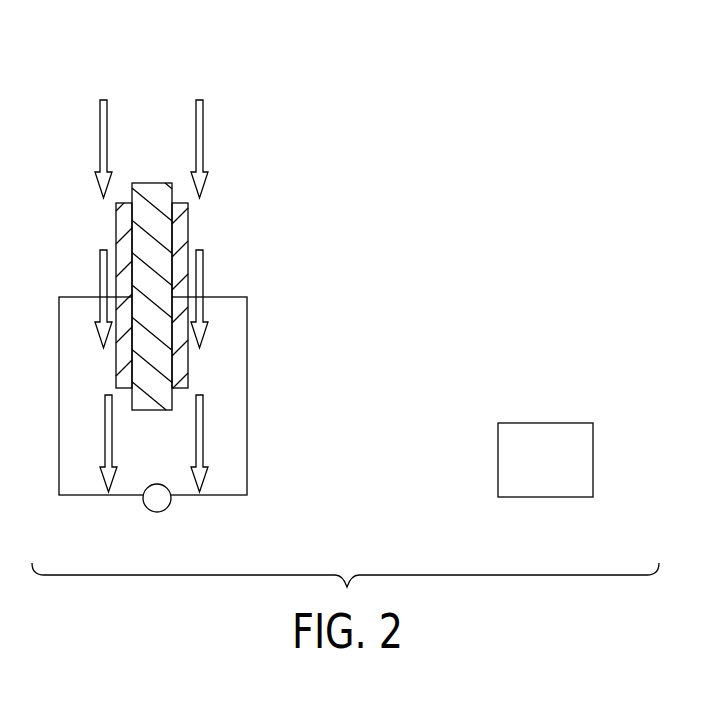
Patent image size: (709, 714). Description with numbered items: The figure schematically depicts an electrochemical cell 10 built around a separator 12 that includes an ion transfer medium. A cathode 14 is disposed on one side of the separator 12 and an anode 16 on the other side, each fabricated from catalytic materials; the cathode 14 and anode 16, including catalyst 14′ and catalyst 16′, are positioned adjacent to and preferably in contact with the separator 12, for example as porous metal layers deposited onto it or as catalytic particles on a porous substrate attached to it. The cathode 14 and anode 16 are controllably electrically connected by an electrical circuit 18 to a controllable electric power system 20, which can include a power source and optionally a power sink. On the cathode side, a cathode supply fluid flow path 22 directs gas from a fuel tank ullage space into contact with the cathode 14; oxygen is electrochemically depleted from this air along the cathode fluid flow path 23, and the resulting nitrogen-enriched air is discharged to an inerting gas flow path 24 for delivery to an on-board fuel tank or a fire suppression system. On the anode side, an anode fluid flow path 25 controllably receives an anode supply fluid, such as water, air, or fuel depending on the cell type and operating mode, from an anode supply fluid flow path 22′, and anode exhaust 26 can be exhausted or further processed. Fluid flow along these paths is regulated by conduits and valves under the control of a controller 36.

The electrochemical cell 10 is at (368, 115).
The separator 12 is at (152, 183).
The cathode 14 is at (116, 223).
The catalyst 14′ is at (124, 295).
The anode 16 is at (188, 215).
The catalyst 16′ is at (180, 295).
The electrical circuit 18 is at (230, 297).
The controllable electric power system 20 is at (171, 504).
The cathode supply fluid flow path 22 is at (100, 128).
The anode supply fluid flow path 22′ is at (202, 148).
The cathode fluid flow path 23 is at (100, 275).
The inerting gas flow path 24 is at (105, 442).
The anode fluid flow path 25 is at (203, 307).
The anode exhaust 26 is at (203, 452).
The controller 36 is at (593, 457).